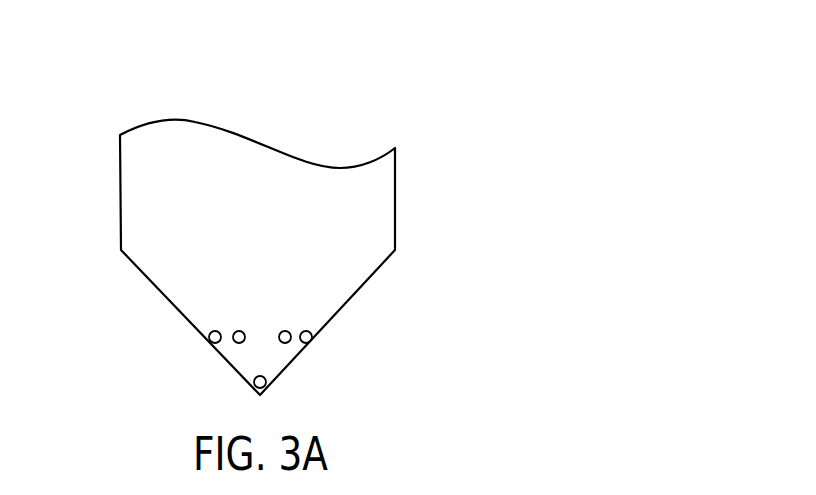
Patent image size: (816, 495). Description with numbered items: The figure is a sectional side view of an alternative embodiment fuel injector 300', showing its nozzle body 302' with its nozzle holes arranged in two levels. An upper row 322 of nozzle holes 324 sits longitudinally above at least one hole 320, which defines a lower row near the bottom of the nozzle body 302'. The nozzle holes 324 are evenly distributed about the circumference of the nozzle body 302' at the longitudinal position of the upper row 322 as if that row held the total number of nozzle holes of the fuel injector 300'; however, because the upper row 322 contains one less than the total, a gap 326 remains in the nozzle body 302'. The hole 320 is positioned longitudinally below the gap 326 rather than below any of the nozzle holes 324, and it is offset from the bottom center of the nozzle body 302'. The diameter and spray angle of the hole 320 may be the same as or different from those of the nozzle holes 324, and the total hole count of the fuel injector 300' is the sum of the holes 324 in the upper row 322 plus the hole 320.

The fuel injector 300' is at (476, 140).
The nozzle body 302' is at (221, 257).
The hole 320 is at (252, 384).
The upper row 322 is at (287, 297).
The nozzle holes 324 is at (209, 335).
The gap 326 is at (259, 330).